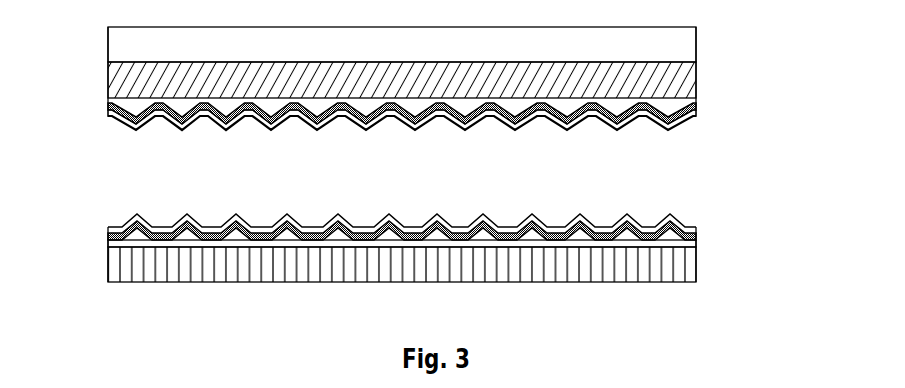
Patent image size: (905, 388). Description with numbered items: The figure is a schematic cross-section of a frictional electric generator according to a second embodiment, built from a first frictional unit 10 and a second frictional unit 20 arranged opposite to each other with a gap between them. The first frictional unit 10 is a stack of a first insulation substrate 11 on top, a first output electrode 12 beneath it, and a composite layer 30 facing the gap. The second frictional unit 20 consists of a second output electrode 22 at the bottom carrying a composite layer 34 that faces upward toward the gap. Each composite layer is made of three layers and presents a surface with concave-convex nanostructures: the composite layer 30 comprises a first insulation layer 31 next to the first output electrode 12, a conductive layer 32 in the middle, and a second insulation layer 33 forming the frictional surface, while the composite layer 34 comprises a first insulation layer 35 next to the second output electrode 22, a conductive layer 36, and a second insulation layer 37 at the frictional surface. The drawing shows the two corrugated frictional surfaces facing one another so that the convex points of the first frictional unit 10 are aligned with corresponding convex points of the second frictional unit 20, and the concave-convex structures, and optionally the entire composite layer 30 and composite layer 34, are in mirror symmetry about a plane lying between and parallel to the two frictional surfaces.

The first frictional unit 10 is at (95, 50).
The first insulation substrate 11 is at (697, 43).
The first output electrode 12 is at (697, 78).
The second frictional unit 20 is at (95, 228).
The second output electrode 22 is at (697, 265).
The composite layer 30 is at (793, 87).
The first insulation layer 31 is at (697, 102).
The conductive layer 32 is at (697, 112).
The second insulation layer 33 is at (697, 118).
The composite layer 34 is at (793, 213).
The first insulation layer 35 is at (697, 243).
The conductive layer 36 is at (697, 235).
The second insulation layer 37 is at (697, 226).